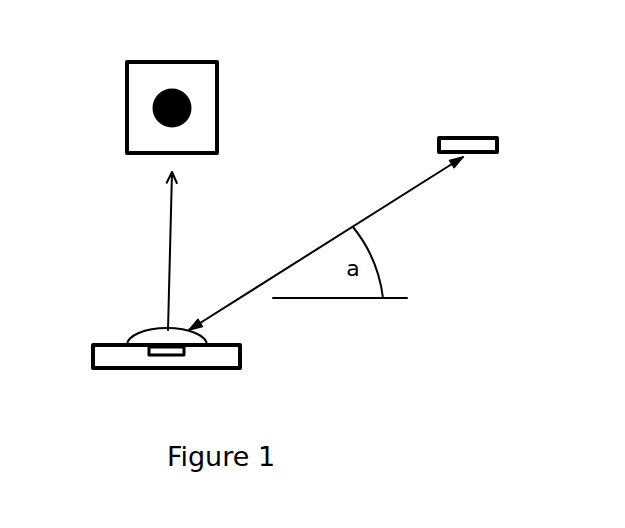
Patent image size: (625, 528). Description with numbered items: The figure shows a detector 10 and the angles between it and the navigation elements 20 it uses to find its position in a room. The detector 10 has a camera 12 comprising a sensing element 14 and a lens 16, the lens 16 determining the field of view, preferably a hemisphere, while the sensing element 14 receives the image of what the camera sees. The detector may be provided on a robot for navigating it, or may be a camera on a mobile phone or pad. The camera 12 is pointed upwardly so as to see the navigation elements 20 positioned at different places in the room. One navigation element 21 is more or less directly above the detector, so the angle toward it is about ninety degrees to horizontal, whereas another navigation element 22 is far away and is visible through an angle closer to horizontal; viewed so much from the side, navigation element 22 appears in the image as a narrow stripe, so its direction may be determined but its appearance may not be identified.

The detector 10 is at (274, 384).
The camera 12 is at (93, 327).
The sensing element 14 is at (160, 373).
The lens 16 is at (139, 324).
The navigation elements 20 is at (415, 124).
The navigation element 21 is at (120, 126).
The navigation element 22 is at (431, 159).